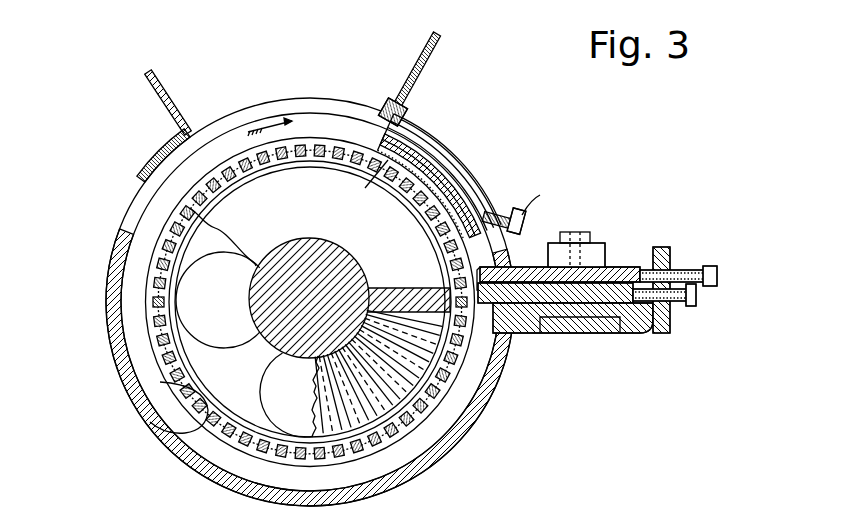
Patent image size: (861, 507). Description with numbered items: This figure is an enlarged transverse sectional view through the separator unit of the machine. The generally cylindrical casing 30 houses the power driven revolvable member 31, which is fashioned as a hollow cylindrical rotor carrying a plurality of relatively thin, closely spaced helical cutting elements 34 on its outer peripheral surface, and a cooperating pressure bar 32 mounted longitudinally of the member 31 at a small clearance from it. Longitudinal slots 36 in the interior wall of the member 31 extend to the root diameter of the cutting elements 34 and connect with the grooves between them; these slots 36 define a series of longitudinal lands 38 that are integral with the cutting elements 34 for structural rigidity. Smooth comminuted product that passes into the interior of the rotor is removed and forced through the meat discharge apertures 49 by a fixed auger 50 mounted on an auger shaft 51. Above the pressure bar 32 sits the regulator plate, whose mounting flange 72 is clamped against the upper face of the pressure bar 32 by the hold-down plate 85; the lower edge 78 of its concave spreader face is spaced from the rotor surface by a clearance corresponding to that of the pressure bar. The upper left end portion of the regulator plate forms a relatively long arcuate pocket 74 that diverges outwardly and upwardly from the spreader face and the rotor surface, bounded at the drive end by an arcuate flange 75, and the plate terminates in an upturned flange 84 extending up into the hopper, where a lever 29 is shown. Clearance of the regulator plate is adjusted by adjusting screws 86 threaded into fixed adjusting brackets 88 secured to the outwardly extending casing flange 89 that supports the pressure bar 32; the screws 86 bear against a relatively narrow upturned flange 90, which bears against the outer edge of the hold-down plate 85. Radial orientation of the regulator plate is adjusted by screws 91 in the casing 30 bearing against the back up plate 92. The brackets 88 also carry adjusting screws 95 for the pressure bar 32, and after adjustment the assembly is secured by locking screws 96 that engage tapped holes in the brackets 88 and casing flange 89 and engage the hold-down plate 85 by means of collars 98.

The lever 29 is at (428, 66).
The casing 30 is at (128, 400).
The revolvable member 31 is at (238, 154).
The pressure bar 32 is at (520, 335).
The cutting elements 34 is at (442, 405).
The longitudinal slots 36 is at (162, 421).
The longitudinal lands 38 is at (163, 245).
The meat discharge apertures 49 is at (210, 345).
The fixed auger 50 is at (385, 288).
The auger shaft 51 is at (280, 352).
The mounting flange 72 is at (618, 268).
The arcuate pocket 74 is at (447, 150).
The arcuate flange 75 is at (363, 186).
The lower edge 78 is at (452, 283).
The upturned flange 84 is at (393, 100).
The hold-down plate 85 is at (537, 267).
The adjusting screws 86 is at (718, 275).
The adjusting brackets 88 is at (668, 250).
The casing flange 89 is at (600, 333).
The upturned flange 90 is at (641, 268).
The screws 91 is at (542, 194).
The back up plate 92 is at (488, 220).
The adjusting screws 95 is at (697, 296).
The locking screws 96 is at (572, 243).
The collars 98 is at (600, 243).